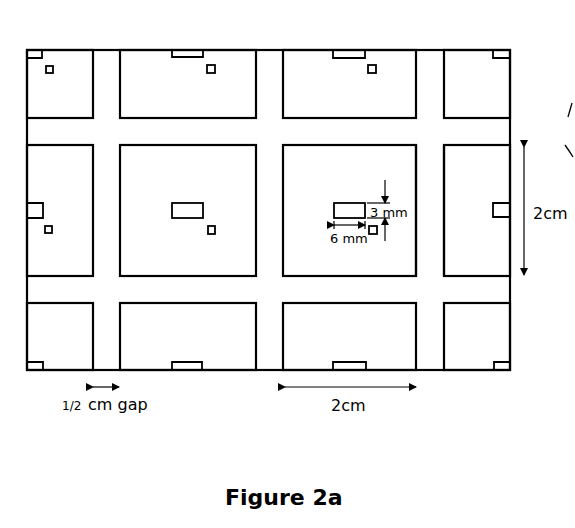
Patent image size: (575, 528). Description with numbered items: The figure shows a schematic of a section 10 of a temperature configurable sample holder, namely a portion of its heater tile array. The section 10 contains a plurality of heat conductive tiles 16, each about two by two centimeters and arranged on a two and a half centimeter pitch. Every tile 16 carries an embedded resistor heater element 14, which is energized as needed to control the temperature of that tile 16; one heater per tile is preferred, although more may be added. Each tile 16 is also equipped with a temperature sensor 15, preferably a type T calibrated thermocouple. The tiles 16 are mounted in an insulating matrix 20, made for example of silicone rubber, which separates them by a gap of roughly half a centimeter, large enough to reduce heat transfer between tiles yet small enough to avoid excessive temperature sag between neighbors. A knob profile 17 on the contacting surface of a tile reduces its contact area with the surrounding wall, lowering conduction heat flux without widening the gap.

The section 10 is at (507, 47).
The heater element 14 is at (189, 222).
The temperature sensor 15 is at (215, 238).
The heat conductive tile 16 is at (246, 262).
The knob profile 17 is at (562, 130).
The insulating matrix 20 is at (427, 258).